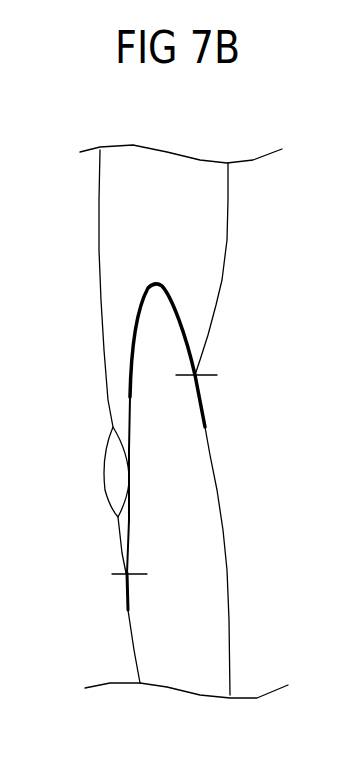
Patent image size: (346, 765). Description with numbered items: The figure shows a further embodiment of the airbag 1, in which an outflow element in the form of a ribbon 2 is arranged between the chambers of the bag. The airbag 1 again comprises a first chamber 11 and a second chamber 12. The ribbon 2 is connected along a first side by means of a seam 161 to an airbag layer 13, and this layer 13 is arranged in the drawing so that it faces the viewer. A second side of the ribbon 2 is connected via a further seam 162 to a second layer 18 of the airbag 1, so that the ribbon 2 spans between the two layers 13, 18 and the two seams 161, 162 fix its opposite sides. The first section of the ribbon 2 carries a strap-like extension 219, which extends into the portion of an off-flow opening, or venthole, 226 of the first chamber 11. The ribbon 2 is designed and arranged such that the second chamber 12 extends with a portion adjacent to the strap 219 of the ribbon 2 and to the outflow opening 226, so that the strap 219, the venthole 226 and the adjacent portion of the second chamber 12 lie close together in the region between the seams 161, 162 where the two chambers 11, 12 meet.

The airbag 1 is at (265, 143).
The ribbon 2 is at (183, 322).
The first chamber 11 is at (116, 236).
The second chamber 12 is at (207, 503).
The airbag layer 13 is at (96, 265).
The second layer 18 is at (230, 236).
The seam 161 is at (122, 577).
The seam 162 is at (197, 377).
The strap-like extension 219 is at (130, 542).
The off-flow opening 226 is at (113, 477).